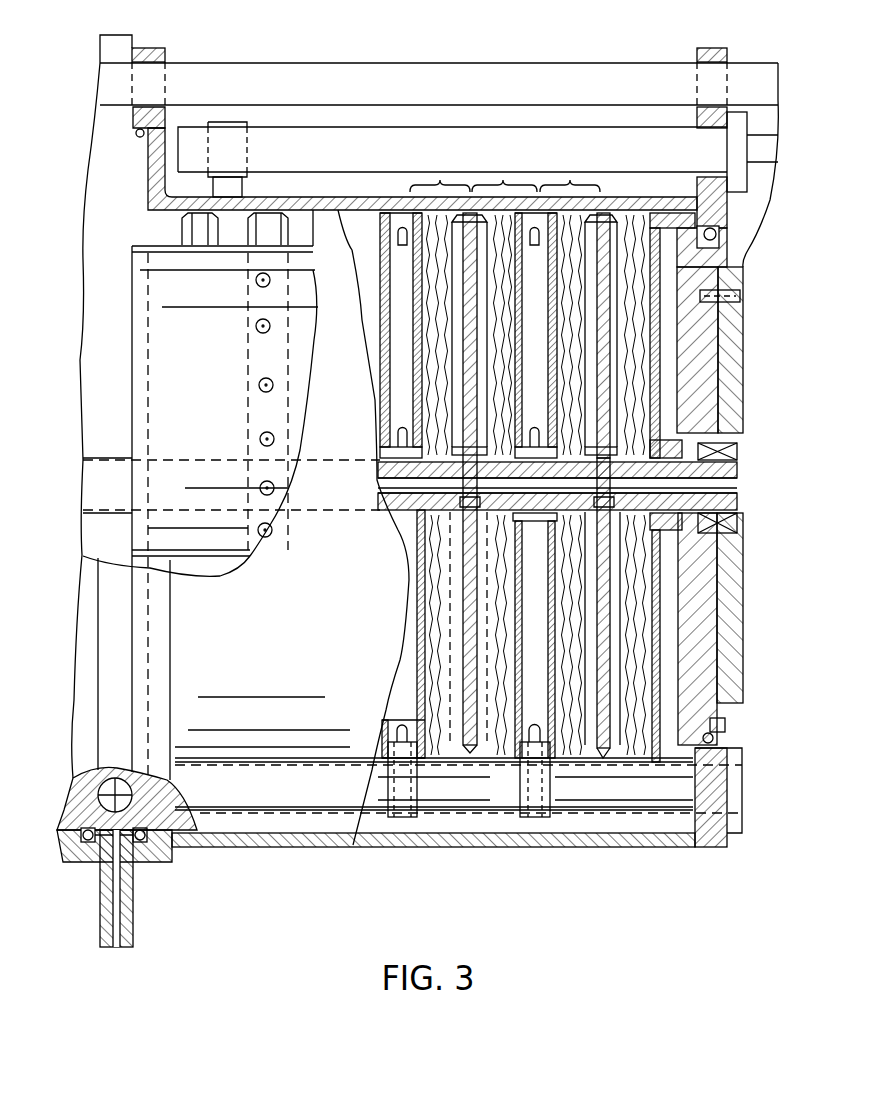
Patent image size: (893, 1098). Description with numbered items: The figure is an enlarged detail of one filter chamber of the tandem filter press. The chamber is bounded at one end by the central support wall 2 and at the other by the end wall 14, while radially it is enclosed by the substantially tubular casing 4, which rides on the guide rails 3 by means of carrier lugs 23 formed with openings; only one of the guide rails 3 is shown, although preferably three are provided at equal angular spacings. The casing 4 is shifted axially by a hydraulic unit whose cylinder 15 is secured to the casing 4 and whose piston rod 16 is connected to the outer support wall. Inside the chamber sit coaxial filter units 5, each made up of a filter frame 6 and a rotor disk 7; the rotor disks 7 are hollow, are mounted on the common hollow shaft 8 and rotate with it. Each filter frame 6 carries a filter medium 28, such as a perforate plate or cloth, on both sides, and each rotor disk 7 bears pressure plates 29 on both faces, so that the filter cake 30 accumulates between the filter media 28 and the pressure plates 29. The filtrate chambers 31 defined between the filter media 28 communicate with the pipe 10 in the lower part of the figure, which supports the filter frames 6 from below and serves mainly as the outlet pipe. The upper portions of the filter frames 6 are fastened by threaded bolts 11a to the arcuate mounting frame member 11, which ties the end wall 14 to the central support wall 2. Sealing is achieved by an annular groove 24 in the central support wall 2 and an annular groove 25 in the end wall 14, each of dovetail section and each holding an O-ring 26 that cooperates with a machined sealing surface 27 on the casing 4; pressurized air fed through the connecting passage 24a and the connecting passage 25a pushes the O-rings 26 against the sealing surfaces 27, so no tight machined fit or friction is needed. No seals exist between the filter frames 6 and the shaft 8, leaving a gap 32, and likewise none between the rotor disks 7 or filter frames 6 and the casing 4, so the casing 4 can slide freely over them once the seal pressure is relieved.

The support wall 2 is at (121, 45).
The rail 3 is at (475, 70).
The casing 4 is at (465, 841).
The filter unit 5 is at (440, 182).
The filter frame 6 is at (396, 225).
The rotor disk 7 is at (603, 790).
The shaft 8 is at (725, 470).
The pipe 10 is at (447, 790).
The mounting frame member 11 is at (157, 433).
The threaded bolt 11a is at (258, 386).
The end wall 14 is at (697, 708).
The cylinder 15 is at (588, 135).
The piston rod 16 is at (757, 147).
The carrier lug 23 is at (157, 56).
The annular groove 24 is at (172, 846).
The connecting passage 24a is at (118, 890).
The annular groove 25 is at (715, 738).
The connecting passage 25a is at (727, 230).
The O-ring 26 is at (150, 850).
The sealing surface 27 is at (716, 234).
The filter medium 28 is at (382, 222).
The pressure plate 29 is at (600, 230).
The filter cake 30 is at (652, 215).
The filtrate chamber 31 is at (398, 712).
The gap 32 is at (708, 486).